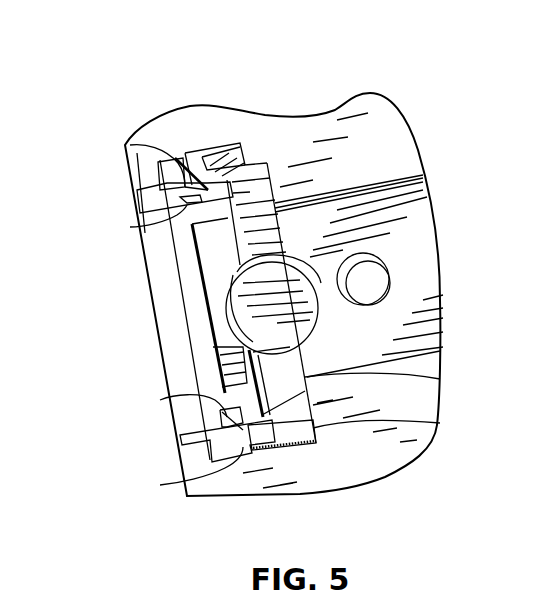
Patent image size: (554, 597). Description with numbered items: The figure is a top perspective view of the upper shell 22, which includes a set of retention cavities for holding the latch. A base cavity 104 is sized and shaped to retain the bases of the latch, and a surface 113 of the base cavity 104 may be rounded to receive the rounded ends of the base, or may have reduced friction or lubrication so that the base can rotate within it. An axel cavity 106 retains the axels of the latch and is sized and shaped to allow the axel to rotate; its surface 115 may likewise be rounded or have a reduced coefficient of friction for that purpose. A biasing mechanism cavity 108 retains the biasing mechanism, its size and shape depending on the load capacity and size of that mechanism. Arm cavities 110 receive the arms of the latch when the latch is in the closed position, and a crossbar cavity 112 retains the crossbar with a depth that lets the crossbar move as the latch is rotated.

The upper shell 22 is at (397, 130).
The base cavity 104 is at (217, 170).
The axel cavity 106 is at (150, 152).
The biasing mechanism cavity 108 is at (272, 335).
The arm cavities 110 is at (162, 199).
The crossbar cavity 112 is at (240, 263).
The surface of the base cavity 113 is at (193, 200).
The surface of the axel cavity 115 is at (440, 378).